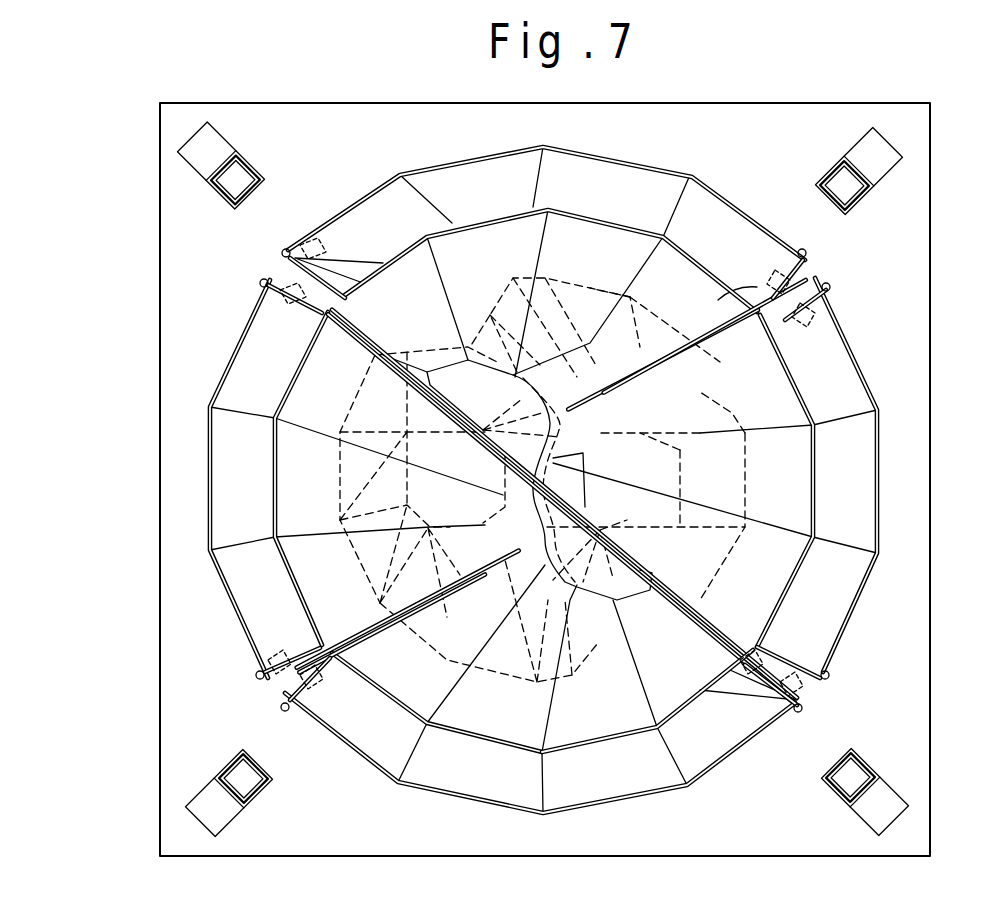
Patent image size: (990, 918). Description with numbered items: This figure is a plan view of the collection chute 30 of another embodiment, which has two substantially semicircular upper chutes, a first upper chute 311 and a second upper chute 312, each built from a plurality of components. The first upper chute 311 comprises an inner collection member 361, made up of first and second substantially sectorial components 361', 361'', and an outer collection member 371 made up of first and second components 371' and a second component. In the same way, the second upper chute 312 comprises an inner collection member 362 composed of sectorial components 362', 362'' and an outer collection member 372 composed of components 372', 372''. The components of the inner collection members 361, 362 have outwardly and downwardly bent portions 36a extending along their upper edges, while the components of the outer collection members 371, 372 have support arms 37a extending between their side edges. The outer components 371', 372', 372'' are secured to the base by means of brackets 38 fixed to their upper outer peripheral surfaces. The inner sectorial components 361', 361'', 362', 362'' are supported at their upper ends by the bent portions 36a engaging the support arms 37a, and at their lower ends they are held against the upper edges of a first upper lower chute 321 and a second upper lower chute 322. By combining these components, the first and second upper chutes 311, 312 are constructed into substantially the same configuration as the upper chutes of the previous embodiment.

The collection chute 30 is at (735, 175).
The first component of outer collection member 372' is at (546, 187).
The first substantially sectorial component of inner collection member 362' is at (551, 217).
The outer collection member 372 is at (725, 321).
The second upper chute 312 is at (857, 324).
The inner collection member 362 is at (835, 474).
The second upper lower chute 322 is at (850, 396).
The second component of outer collection member 372'' is at (901, 475).
The second substantially sectorial component of inner collection member 362'' is at (735, 546).
The bent portions 36a is at (395, 257).
The brackets 38 is at (286, 249).
The support arms 37a is at (318, 290).
The first upper lower chute 321 is at (348, 425).
The second substantially sectorial component of inner collection member 361'' is at (304, 478).
The first component of outer collection member 371' is at (482, 559).
The first upper chute 311 is at (237, 632).
The outer collection member 371 is at (361, 626).
The inner collection member 361 is at (402, 708).
The first substantially sectorial component of inner collection member 361' is at (647, 744).